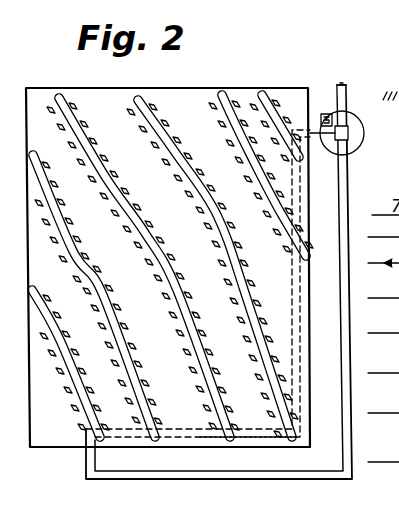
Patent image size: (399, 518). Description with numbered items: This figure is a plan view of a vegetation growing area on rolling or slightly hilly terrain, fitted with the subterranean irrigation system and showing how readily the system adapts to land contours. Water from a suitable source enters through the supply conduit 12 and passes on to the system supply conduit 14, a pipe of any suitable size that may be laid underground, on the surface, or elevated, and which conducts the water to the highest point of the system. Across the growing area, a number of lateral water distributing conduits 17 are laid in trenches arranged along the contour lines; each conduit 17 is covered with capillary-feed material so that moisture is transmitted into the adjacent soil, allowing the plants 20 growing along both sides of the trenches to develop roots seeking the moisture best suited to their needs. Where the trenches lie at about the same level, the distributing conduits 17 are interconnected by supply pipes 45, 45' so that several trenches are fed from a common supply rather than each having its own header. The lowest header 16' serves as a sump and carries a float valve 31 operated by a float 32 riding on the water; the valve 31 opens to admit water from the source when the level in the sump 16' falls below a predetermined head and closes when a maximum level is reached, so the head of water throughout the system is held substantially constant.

The supply conduit 12 is at (345, 98).
The system supply conduit 14 is at (264, 476).
The header (sump) 16' is at (351, 141).
The water distributing conduit 17 is at (270, 97).
The plants 20 is at (221, 131).
The float valve 31 is at (348, 133).
The operating float 32 is at (324, 113).
The interconnecting supply pipes 45 is at (232, 301).
The interconnecting supply pipe 45' is at (250, 454).